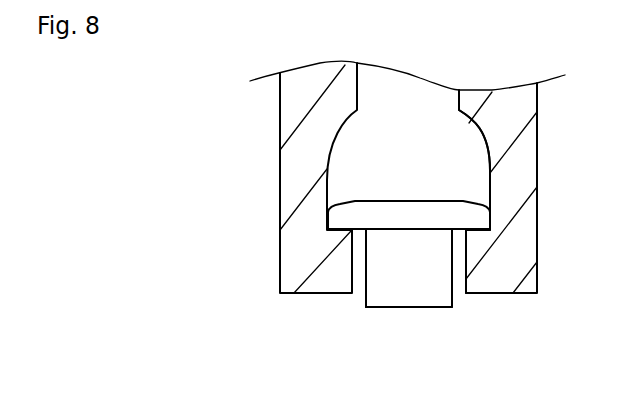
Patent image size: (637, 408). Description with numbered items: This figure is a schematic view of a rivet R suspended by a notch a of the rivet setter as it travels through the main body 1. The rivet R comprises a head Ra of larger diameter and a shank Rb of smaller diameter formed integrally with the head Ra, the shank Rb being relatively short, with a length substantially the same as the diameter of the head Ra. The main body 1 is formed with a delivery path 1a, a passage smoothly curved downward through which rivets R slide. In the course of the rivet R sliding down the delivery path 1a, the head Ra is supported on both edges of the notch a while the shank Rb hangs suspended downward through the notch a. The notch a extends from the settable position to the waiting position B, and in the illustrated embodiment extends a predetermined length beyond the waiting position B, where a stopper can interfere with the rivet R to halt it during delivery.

The main body 1 is at (288, 120).
The delivery path 1a is at (486, 148).
The head Ra is at (424, 212).
The shank Rb is at (435, 298).
The rivet R is at (374, 258).
The notch a is at (466, 258).
The waiting position B is at (360, 310).